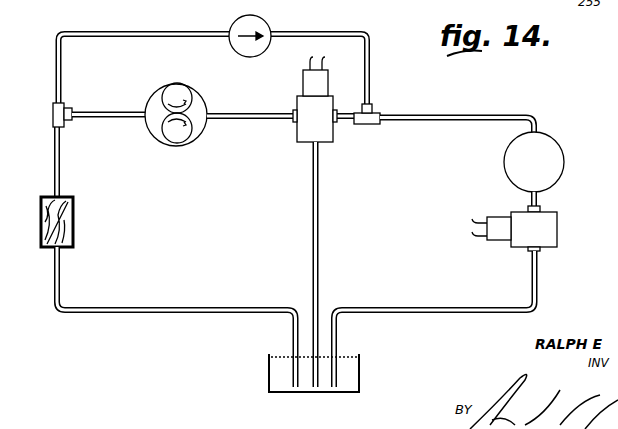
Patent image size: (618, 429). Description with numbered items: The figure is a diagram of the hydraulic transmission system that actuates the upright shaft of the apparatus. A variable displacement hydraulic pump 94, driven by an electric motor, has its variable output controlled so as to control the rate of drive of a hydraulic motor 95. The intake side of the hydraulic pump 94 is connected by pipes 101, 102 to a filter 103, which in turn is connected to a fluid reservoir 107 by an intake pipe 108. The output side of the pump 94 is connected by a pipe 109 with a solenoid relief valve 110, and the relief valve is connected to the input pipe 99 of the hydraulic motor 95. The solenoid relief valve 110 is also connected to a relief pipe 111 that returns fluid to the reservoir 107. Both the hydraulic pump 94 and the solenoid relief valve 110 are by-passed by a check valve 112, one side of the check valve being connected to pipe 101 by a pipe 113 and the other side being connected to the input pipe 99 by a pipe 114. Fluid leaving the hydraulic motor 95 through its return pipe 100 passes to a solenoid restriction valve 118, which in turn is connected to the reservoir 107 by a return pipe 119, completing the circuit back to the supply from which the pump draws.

The variable displacement hydraulic pump 94 is at (176, 147).
The hydraulic motor 95 is at (557, 148).
The input pipe 99 is at (534, 122).
The return pipe 100 is at (541, 209).
The pipe 101 is at (111, 111).
The pipe 102 is at (62, 138).
The filter 103 is at (70, 225).
The fluid reservoir 107 is at (269, 365).
The intake pipe 108 is at (292, 305).
The pipe 109 is at (238, 112).
The solenoid relief valve 110 is at (297, 136).
The relief pipe 111 is at (319, 231).
The check valve 112 is at (265, 28).
The pipe 113 is at (133, 19).
The pipe 114 is at (371, 74).
The solenoid restriction valve 118 is at (551, 228).
The return pipe 119 is at (336, 305).